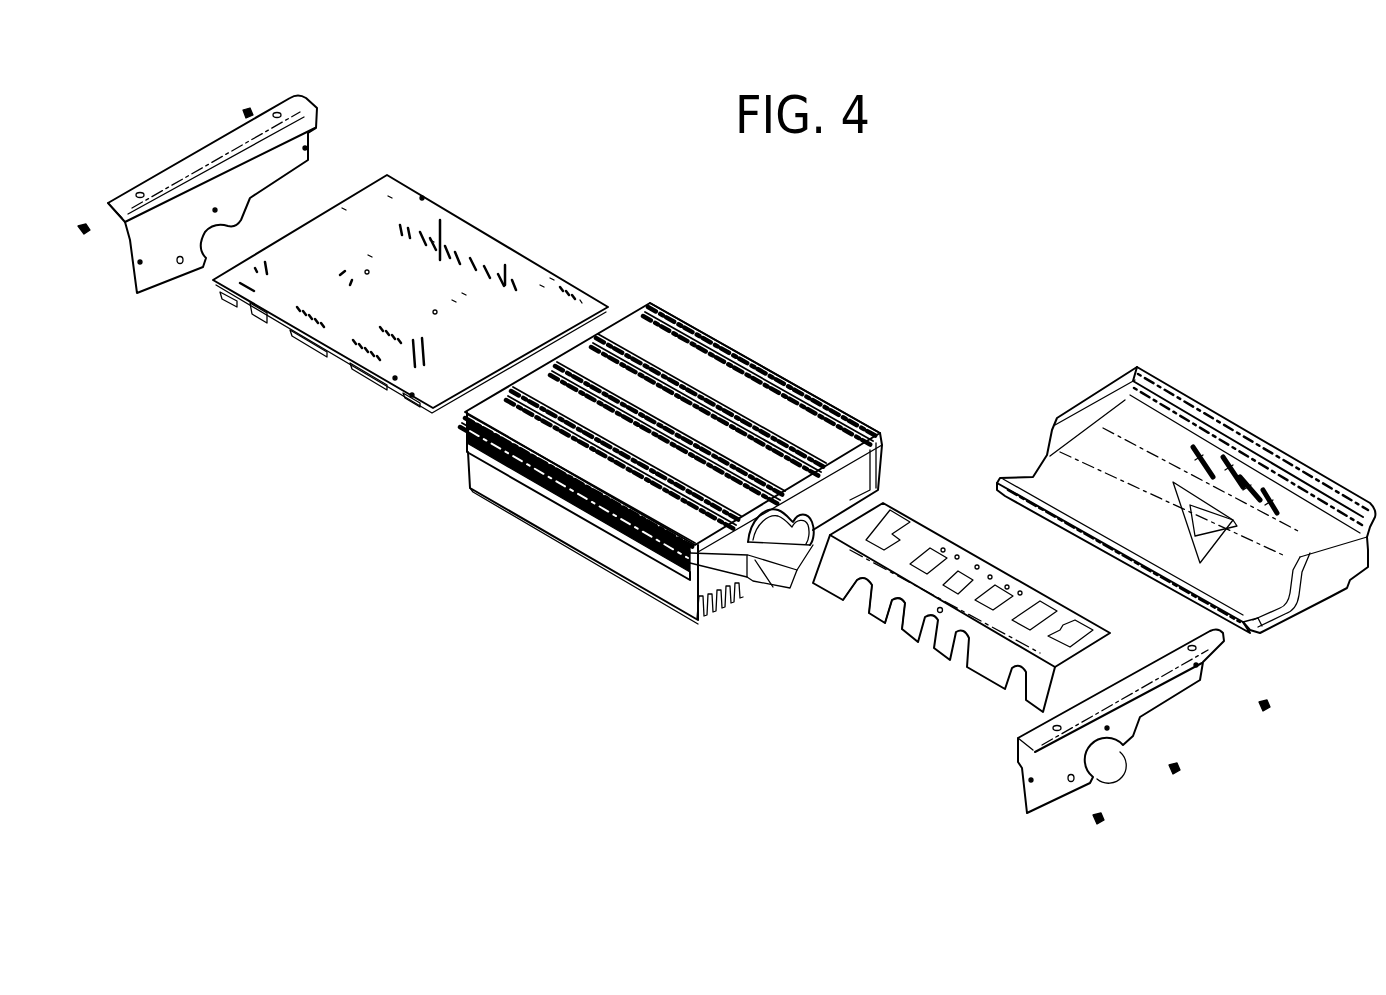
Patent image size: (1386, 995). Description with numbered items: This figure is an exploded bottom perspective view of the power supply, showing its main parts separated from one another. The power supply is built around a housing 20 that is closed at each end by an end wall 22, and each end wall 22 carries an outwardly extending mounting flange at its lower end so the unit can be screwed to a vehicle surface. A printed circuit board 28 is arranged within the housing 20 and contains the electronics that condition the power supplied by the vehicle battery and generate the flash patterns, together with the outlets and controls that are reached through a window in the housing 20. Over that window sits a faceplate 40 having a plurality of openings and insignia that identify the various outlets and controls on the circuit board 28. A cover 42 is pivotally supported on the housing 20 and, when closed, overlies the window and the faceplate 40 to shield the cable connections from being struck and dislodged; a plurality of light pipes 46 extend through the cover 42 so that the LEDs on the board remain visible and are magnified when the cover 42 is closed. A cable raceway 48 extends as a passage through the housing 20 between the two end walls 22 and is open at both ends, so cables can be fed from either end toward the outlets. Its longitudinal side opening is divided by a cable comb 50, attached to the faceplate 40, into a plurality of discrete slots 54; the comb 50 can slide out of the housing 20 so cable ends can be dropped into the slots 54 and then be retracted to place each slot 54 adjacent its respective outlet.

The housing 20 is at (538, 508).
The end wall 22 is at (215, 152).
The printed circuit board 28 is at (353, 365).
The faceplate 40 is at (940, 530).
The cover 42 is at (1147, 445).
The light pipes 46 is at (1270, 330).
The cable raceway 48 is at (770, 575).
The cable comb 50 is at (970, 663).
The slots 54 is at (922, 636).